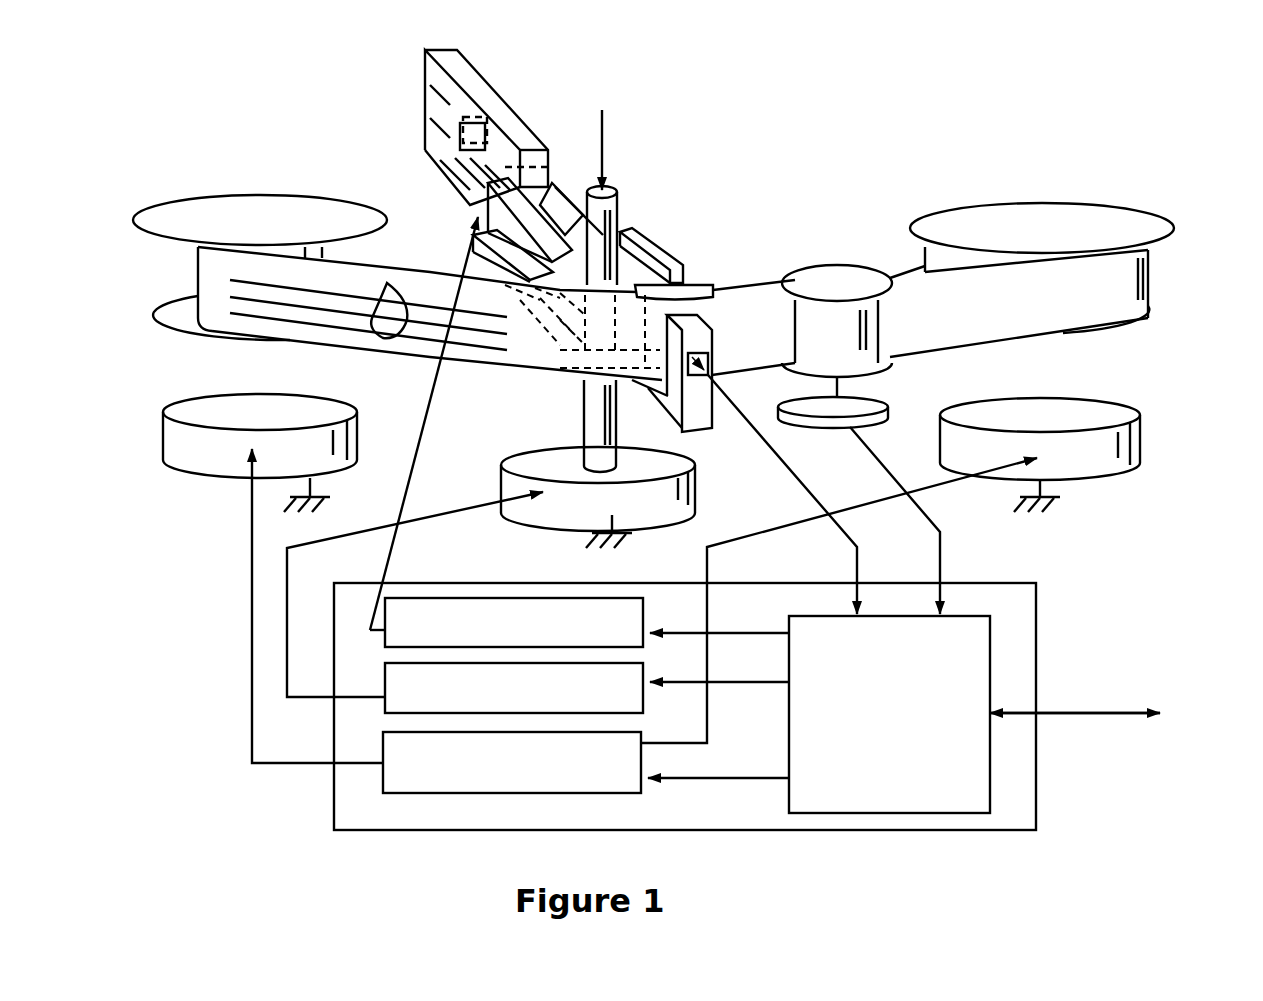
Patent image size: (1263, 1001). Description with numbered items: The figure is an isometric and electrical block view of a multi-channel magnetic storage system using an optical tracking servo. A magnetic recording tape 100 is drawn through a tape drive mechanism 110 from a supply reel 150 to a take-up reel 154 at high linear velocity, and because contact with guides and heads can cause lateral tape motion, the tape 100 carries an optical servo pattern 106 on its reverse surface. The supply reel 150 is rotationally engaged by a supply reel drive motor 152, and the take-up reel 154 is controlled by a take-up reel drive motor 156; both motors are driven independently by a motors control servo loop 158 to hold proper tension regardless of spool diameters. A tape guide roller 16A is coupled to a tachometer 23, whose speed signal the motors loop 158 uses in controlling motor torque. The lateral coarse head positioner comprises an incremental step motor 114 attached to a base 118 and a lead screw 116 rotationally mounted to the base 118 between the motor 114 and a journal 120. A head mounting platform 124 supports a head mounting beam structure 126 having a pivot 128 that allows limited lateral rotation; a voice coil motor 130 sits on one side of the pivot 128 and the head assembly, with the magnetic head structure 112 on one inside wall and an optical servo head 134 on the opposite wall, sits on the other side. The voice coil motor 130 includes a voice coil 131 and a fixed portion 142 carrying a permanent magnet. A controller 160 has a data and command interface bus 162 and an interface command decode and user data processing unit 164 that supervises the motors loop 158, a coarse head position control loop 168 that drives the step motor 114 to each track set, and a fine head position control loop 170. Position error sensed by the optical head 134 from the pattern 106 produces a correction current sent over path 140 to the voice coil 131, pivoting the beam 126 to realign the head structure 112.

The magnetic recording tape 100 is at (942, 313).
The optical servo pattern 106 is at (383, 340).
The tape drive mechanism 110 is at (213, 632).
The head structure 112 is at (695, 290).
The incremental step motor 114 is at (513, 465).
The lead screw 116 is at (595, 418).
The base 118 is at (315, 492).
The journal 120 is at (604, 132).
The head mounting platform 124 is at (457, 195).
The head mounting beam structure 126 is at (467, 180).
The pivot 128 is at (477, 260).
The voice coil motor 130 is at (525, 110).
The voice coil 131 is at (463, 170).
The optical servo head 134 is at (710, 360).
The path 140 is at (431, 395).
The fixed portion 142 is at (423, 93).
The supply reel 150 is at (1103, 227).
The supply reel drive motor 152 is at (1107, 458).
The take-up reel 154 is at (207, 213).
The take-up reel drive motor 156 is at (210, 467).
The motors control servo loop 158 is at (625, 790).
The controller 160 is at (483, 592).
The data and command interface bus 162 is at (1108, 712).
The interface command decode and user data processing unit 164 is at (903, 803).
The coarse head position control loop 168 is at (630, 702).
The fine head position control loop 170 is at (637, 622).
The tape guide roller 16A is at (850, 273).
The tachometer 23 is at (830, 422).